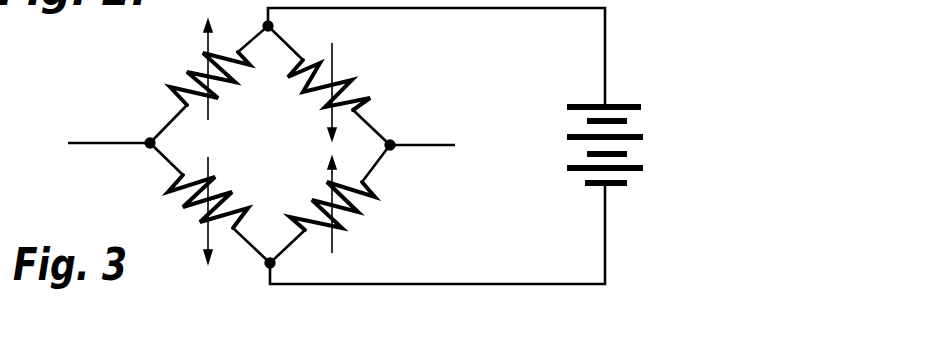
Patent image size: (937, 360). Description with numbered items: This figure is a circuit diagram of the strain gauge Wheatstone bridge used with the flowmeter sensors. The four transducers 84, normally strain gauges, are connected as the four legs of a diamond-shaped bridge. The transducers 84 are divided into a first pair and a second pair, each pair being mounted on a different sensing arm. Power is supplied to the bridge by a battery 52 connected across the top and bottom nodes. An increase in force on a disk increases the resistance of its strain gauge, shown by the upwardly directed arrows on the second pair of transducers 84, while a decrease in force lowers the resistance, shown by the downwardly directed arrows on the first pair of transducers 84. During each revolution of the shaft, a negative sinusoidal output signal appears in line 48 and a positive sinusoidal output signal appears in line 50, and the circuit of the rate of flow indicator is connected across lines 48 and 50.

The line 48 is at (107, 143).
The line 50 is at (430, 145).
The battery 52 is at (630, 105).
The transducers 84 is at (168, 87).